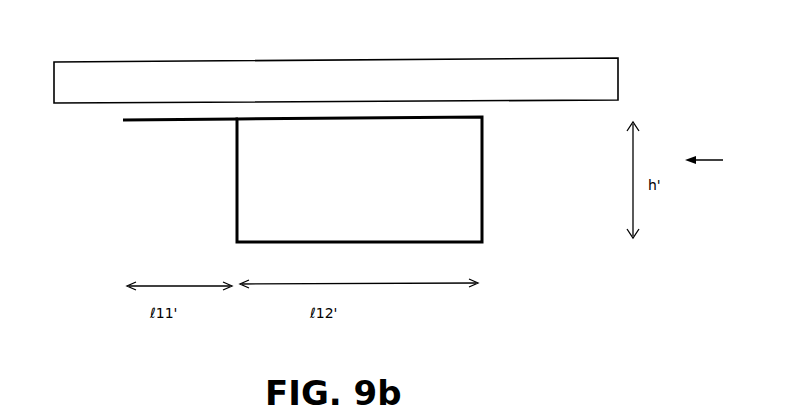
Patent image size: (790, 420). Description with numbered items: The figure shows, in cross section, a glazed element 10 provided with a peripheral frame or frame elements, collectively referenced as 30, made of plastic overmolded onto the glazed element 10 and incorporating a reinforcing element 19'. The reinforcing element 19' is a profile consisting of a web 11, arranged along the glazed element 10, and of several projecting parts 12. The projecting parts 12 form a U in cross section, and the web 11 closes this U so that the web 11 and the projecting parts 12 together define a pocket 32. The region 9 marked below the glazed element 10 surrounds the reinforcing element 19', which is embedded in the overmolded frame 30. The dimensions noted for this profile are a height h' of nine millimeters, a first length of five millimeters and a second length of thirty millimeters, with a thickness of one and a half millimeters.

The substrate 9 is at (572, 149).
The glazed element 10 is at (344, 88).
The web 11 is at (143, 121).
The projecting parts 12 is at (236, 180).
The reinforcing element 19' is at (548, 273).
The peripheral frame or frame elements 30 is at (715, 162).
The pocket 32 is at (390, 140).